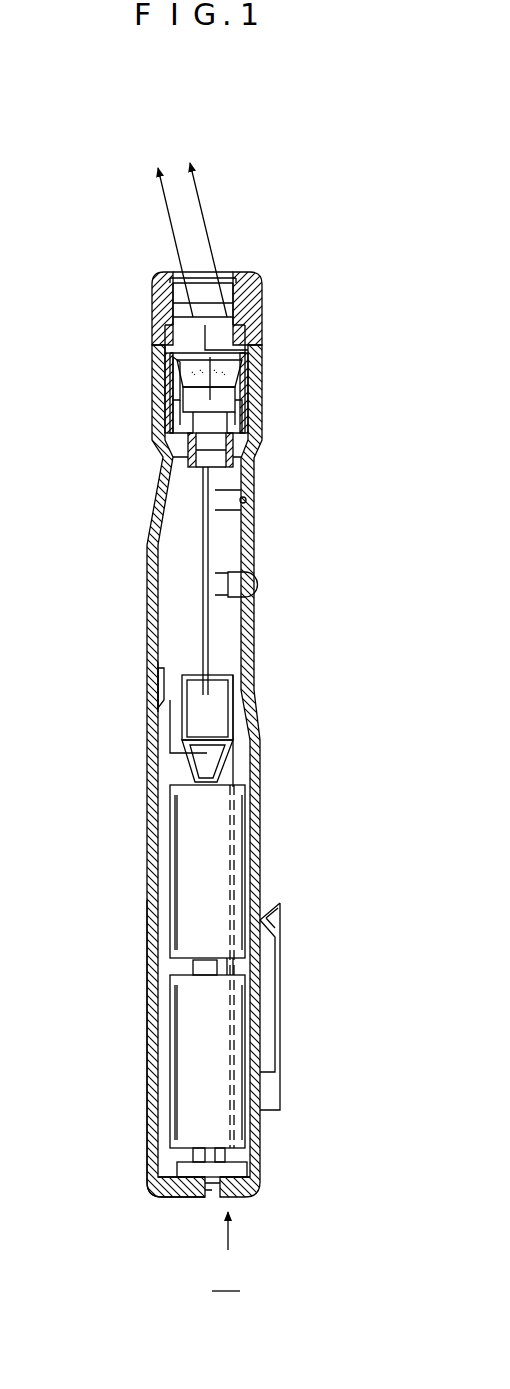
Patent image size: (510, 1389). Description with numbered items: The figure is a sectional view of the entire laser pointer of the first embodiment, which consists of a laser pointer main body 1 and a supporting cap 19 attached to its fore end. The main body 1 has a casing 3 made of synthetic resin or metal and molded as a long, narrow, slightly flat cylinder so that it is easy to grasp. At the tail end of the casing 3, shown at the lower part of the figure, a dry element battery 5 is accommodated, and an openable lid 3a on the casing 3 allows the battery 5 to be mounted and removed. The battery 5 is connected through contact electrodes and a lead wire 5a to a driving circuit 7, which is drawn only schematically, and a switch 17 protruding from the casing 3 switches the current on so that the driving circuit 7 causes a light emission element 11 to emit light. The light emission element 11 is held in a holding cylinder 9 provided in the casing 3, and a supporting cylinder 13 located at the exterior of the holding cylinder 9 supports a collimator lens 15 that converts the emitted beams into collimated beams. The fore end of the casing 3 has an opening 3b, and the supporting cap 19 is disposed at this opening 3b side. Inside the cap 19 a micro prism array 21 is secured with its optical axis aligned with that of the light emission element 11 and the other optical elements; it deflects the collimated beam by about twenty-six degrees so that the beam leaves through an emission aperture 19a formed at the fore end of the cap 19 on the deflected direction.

The laser pointer main body 1 is at (143, 655).
The casing 3 is at (262, 790).
The openable lid 3a is at (147, 1048).
The opening 3b is at (262, 345).
The battery 5 is at (178, 993).
The lead wire 5a is at (240, 855).
The driving circuit 7 is at (212, 628).
The holding cylinder 9 is at (165, 418).
The light emission element 11 is at (262, 447).
The supporting cylinder 13 is at (210, 357).
The collimator lens 15 is at (170, 358).
The switch 17 is at (257, 585).
The supporting cap 19 is at (262, 292).
The emission aperture 19a is at (228, 272).
The micro prism array 21 is at (185, 302).